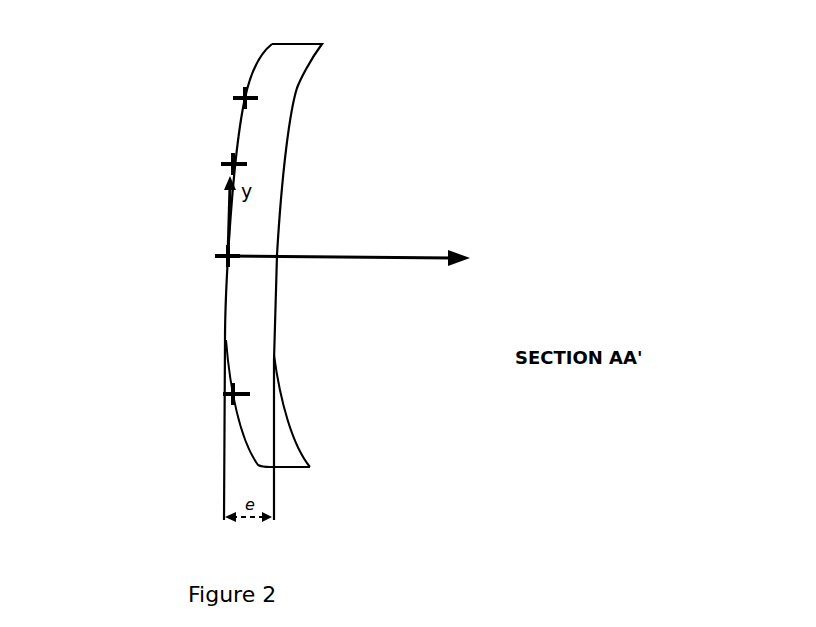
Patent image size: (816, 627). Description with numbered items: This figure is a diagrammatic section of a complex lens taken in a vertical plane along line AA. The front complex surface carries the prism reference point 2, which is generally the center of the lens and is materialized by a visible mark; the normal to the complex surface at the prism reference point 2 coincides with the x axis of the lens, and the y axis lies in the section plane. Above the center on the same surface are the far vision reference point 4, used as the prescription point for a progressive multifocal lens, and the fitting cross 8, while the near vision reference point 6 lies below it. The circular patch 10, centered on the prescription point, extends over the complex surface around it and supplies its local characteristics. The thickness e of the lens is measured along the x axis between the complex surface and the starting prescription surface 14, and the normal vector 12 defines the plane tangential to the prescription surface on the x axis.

The prism reference point 2 is at (202, 250).
The far vision reference point 4 is at (216, 97).
The near vision reference point 6 is at (196, 391).
The fitting cross 8 is at (204, 163).
The circular patch 10 is at (236, 60).
The normal vector 12 is at (412, 272).
The starting prescription surface 14 is at (308, 118).